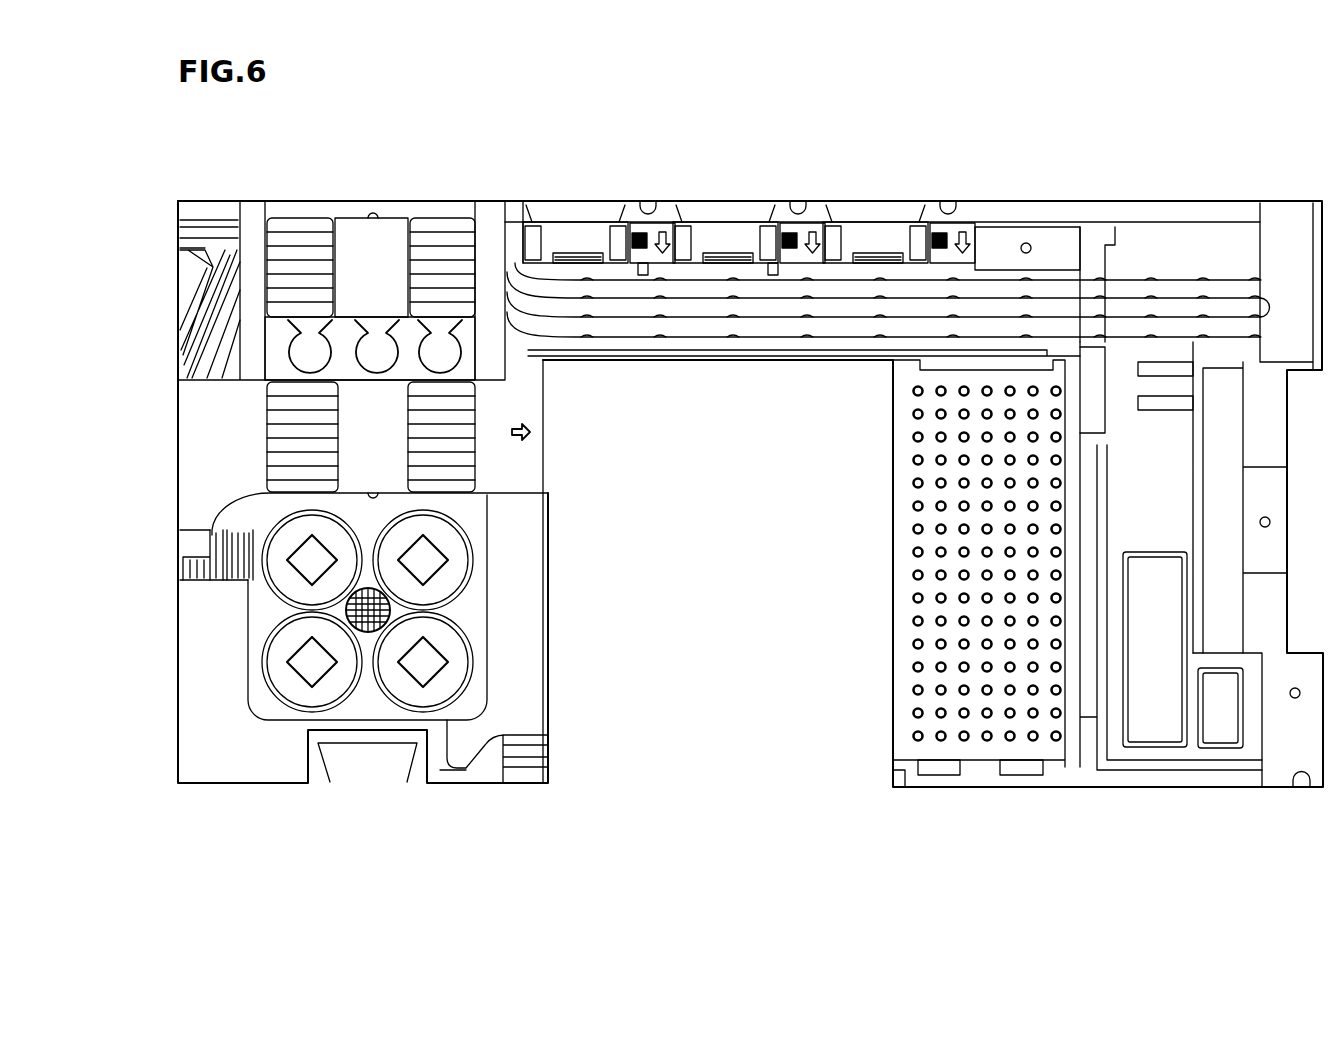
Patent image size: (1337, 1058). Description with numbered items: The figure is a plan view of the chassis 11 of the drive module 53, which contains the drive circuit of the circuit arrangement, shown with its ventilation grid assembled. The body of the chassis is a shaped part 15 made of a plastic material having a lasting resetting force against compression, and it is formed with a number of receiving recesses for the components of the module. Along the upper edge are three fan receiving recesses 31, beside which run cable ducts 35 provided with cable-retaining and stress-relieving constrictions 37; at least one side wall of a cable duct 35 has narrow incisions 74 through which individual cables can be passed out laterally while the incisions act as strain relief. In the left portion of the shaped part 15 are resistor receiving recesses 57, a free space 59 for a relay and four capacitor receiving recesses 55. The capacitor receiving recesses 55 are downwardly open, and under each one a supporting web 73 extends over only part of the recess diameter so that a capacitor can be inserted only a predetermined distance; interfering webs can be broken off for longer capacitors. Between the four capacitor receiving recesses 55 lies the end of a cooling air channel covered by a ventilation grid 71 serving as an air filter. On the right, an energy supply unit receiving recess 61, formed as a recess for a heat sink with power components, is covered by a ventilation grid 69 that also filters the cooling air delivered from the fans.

The chassis 11 is at (268, 785).
The shaped part 15 is at (212, 735).
The fan receiving recesses 31 is at (568, 237).
The cable ducts 35 is at (922, 300).
The cable-retaining and stress-relieving constrictions 37 is at (808, 300).
The drive module 53 is at (1253, 173).
The capacitor receiving recesses 55 is at (443, 550).
The resistor receiving recesses 57 is at (310, 337).
The free space 59 is at (377, 242).
The energy supply unit receiving recess 61 is at (750, 549).
The ventilation grid 69 is at (965, 548).
The ventilation grid 71 is at (392, 627).
The supporting web 73 is at (408, 580).
The incisions 74 is at (643, 273).